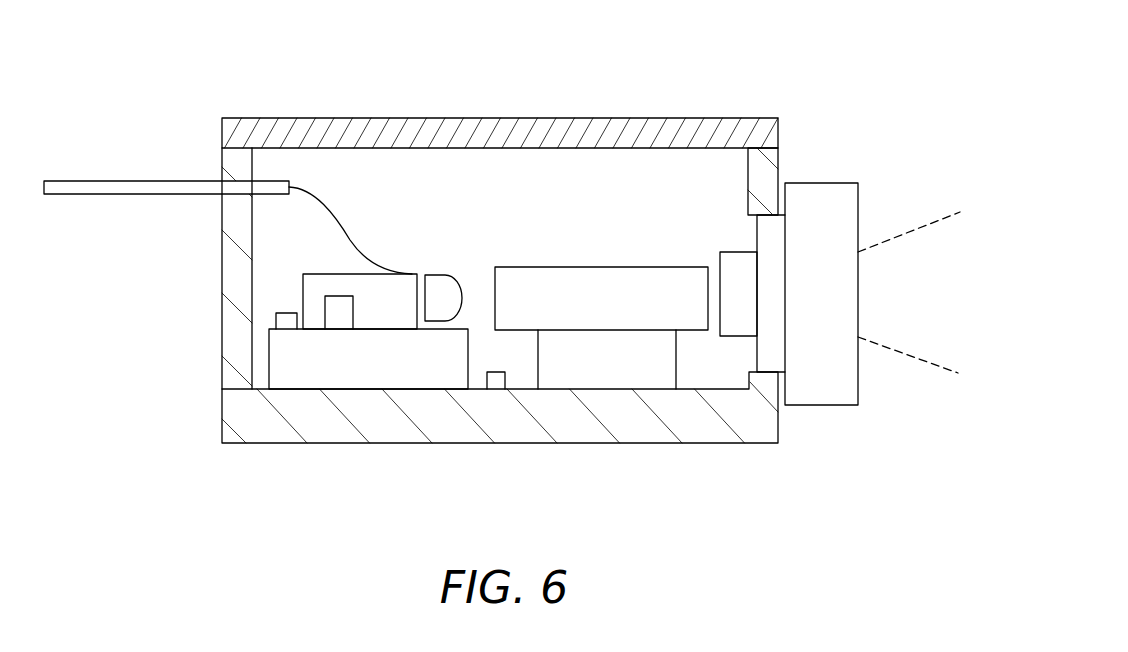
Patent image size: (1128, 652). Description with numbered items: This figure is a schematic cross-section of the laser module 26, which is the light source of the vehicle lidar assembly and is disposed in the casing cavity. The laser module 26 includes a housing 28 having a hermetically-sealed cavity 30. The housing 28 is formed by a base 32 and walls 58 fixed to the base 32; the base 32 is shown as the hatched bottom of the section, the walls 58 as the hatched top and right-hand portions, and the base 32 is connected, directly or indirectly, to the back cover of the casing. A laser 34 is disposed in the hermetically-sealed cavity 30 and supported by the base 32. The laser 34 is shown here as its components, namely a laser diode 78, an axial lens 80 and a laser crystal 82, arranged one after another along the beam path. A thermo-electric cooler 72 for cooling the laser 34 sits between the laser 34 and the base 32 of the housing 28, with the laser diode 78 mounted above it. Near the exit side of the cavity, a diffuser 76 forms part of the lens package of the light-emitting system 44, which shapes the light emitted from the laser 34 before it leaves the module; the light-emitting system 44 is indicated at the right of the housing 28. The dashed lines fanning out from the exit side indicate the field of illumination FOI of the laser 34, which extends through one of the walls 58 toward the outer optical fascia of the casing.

The laser module 26 is at (406, 75).
The housing 28 is at (757, 444).
The hermetically-sealed cavity 30 is at (585, 185).
The base 32 is at (232, 415).
The laser 34 is at (405, 287).
The light-emitting system 44 is at (888, 182).
The walls 58 is at (780, 169).
The thermo-electric cooler 72 is at (288, 358).
The diffuser 76 is at (731, 250).
The laser diode 78 is at (300, 287).
The axial lens 80 is at (435, 316).
The laser crystal 82 is at (621, 265).
The field of illumination FOI is at (928, 362).